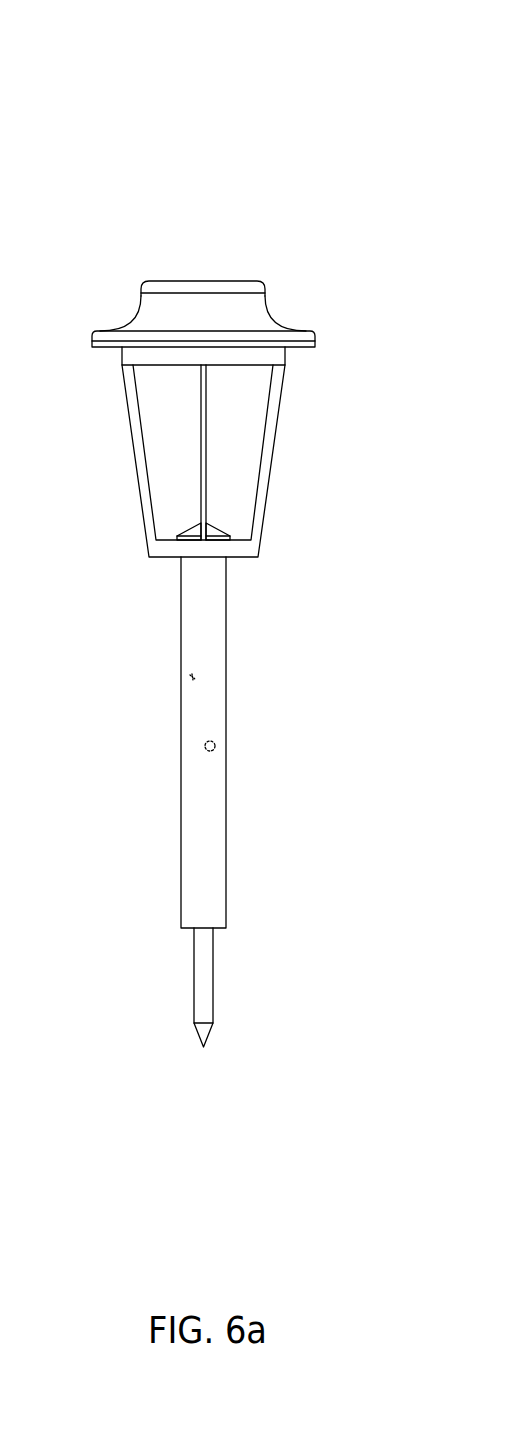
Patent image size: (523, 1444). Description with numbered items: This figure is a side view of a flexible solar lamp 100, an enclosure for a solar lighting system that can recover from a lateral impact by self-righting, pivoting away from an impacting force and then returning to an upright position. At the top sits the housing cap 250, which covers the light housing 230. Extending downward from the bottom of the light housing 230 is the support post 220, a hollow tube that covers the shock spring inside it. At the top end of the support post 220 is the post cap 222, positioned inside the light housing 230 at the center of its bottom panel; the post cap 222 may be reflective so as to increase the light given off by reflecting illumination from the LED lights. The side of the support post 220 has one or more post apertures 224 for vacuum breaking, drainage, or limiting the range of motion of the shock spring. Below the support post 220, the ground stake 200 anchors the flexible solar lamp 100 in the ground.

The flexible solar lamp 100 is at (115, 180).
The housing cap 250 is at (148, 317).
The light housing 230 is at (134, 432).
The post cap 222 is at (215, 533).
The support post 220 is at (213, 823).
The post apertures 224 is at (192, 677).
The ground stake 200 is at (203, 982).